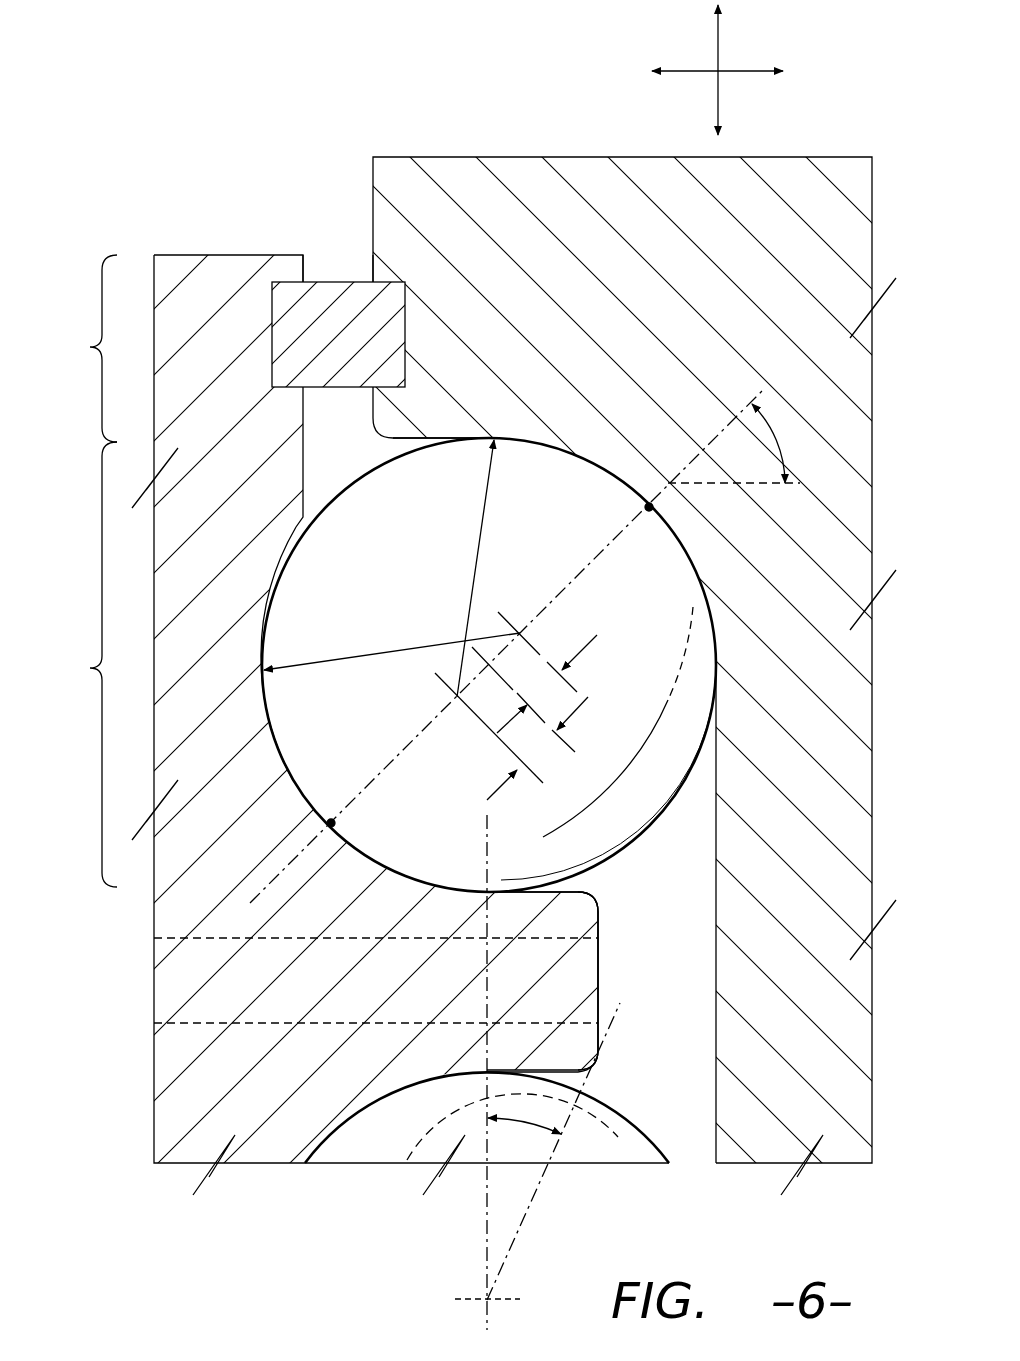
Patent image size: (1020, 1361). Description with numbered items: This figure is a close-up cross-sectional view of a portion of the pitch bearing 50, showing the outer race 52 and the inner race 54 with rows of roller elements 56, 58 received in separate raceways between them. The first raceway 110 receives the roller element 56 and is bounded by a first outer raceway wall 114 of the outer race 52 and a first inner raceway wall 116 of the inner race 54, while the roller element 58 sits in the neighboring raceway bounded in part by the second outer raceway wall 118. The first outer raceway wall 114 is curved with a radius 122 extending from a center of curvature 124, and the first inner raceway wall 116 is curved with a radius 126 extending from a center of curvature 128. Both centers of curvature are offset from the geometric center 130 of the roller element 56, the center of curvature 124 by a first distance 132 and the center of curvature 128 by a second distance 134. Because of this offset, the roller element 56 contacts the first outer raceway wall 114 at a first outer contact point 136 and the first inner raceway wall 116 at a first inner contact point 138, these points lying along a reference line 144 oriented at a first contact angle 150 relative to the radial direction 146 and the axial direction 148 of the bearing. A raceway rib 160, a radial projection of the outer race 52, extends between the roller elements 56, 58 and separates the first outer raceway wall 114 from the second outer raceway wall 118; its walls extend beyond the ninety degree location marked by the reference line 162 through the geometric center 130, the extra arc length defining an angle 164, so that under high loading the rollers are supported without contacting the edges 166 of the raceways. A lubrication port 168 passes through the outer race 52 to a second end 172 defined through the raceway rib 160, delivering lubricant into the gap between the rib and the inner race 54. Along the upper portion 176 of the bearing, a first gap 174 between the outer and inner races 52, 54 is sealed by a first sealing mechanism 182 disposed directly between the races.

The pitch bearing 50 is at (200, 104).
The outer race 52 is at (226, 262).
The inner race 54 is at (574, 176).
The roller element 56 is at (670, 604).
The roller element 58 is at (601, 1148).
The first raceway 110 is at (76, 664).
The first outer raceway wall 114 is at (286, 562).
The first inner raceway wall 116 is at (449, 437).
The second outer raceway wall 118 is at (358, 1115).
The radius 122 is at (371, 655).
The center of curvature 124 is at (520, 633).
The radius 126 is at (482, 522).
The center of curvature 128 is at (456, 697).
The geometric center 130 is at (491, 666).
The first distance 132 is at (570, 648).
The second distance 134 is at (490, 800).
The first outer contact point 136 is at (331, 823).
The first inner contact point 138 is at (648, 506).
The reference line 144 is at (700, 440).
The radial direction 146 is at (738, 72).
The axial direction 148 is at (718, 52).
The first contact angle 150 is at (772, 443).
The raceway rib 160 is at (573, 912).
The reference line 162 is at (420, 1128).
The angle 164 is at (543, 1145).
The edges 166 is at (584, 894).
The lubrication port 168 is at (192, 933).
The second end 172 is at (553, 940).
The first gap 174 is at (335, 265).
The upper portion 176 is at (76, 348).
The first sealing mechanism 182 is at (316, 343).